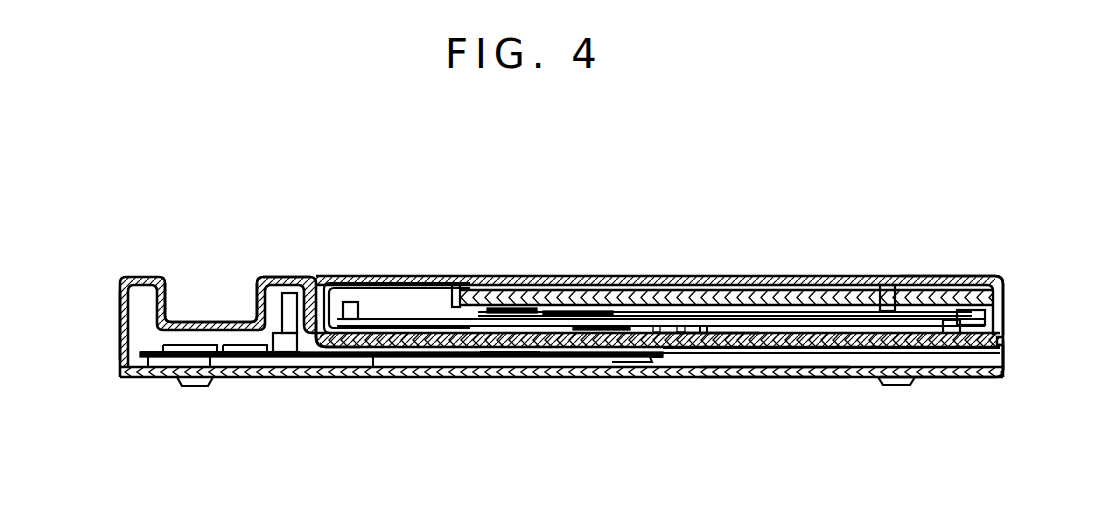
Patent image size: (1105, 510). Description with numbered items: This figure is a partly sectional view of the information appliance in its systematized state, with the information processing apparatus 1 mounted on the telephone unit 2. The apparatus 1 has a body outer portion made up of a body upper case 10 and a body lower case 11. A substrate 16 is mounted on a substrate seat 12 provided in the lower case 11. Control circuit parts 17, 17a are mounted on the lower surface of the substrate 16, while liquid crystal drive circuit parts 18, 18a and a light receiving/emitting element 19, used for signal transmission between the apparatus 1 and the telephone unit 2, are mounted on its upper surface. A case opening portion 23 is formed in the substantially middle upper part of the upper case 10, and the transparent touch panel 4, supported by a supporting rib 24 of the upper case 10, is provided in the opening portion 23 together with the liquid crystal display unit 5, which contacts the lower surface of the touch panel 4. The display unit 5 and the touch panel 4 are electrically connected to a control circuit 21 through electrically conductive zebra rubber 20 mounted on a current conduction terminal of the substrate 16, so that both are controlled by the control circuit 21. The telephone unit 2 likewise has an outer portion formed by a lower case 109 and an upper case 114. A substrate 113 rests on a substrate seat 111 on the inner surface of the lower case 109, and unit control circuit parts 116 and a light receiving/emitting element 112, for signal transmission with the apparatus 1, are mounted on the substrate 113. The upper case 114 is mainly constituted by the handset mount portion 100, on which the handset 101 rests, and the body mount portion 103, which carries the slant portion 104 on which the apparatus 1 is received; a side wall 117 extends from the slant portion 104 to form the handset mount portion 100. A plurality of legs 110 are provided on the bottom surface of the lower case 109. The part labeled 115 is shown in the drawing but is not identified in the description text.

The information processing apparatus 1 is at (1005, 292).
The telephone unit 2 is at (127, 306).
The touch panel 4 is at (815, 280).
The liquid crystal display unit 5 is at (740, 300).
The body upper case 10 is at (979, 278).
The body lower case 11 is at (1003, 316).
The substrate seat 12 is at (942, 355).
The substrate 16 is at (421, 316).
The control circuit part 17 is at (505, 353).
The control circuit part 17a is at (703, 334).
The liquid crystal drive circuit part 18 is at (578, 311).
The liquid crystal drive circuit part 18a is at (650, 319).
The light receiving/emitting element 19 is at (352, 300).
The electrically conductive zebra rubber 20 is at (858, 351).
The control circuit 21 is at (506, 308).
The case opening portion 23 is at (868, 308).
The supporting rib 24 is at (915, 296).
The handset mount portion 100 is at (270, 277).
The handset 101 is at (197, 277).
The body mount portion 103 is at (1008, 389).
The slant portion 104 is at (773, 378).
The lower case 109 is at (990, 380).
The legs 110 is at (192, 387).
The substrate seat 111 is at (612, 363).
The light receiving/emitting element 112 is at (289, 292).
The substrate 113 is at (325, 348).
The upper case 114 is at (1005, 357).
The base plate 115 is at (140, 353).
The unit control circuit parts 116 is at (173, 279).
The side wall 117 is at (325, 283).